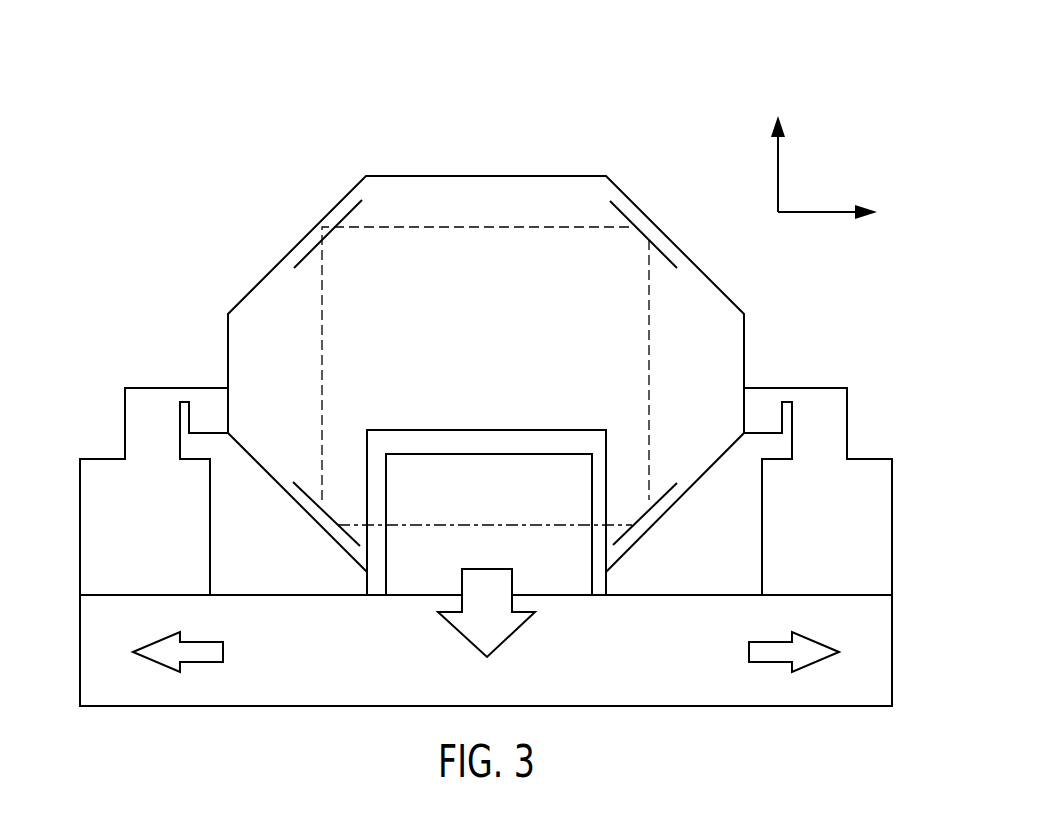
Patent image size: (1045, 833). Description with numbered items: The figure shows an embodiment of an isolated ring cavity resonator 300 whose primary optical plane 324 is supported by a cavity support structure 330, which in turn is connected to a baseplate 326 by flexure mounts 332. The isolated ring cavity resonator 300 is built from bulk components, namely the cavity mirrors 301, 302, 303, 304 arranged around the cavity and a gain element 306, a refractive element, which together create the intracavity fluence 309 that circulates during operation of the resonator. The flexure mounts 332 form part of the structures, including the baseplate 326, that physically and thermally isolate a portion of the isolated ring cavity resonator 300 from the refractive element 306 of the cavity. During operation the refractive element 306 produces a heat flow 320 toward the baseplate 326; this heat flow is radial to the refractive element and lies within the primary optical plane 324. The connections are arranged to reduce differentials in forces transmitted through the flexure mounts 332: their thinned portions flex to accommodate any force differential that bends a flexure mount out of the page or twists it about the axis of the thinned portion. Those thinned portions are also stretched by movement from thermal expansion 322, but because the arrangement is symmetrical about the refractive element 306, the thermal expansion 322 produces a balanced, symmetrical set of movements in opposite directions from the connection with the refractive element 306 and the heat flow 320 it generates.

The isolated ring cavity resonator 300 is at (648, 88).
The cavity support structure 330 is at (460, 166).
The cavity mirror 304 is at (318, 230).
The cavity mirror 301 is at (648, 230).
The cavity mirror 303 is at (320, 520).
The cavity mirror 302 is at (654, 514).
The intracavity fluence 309 is at (334, 363).
The gain element 306 is at (503, 510).
The flexure mounts 332 is at (111, 410).
The baseplate 326 is at (428, 683).
The heat flow 320 is at (526, 634).
The thermal expansion 322 is at (232, 657).
The primary optical plane 324 is at (792, 176).